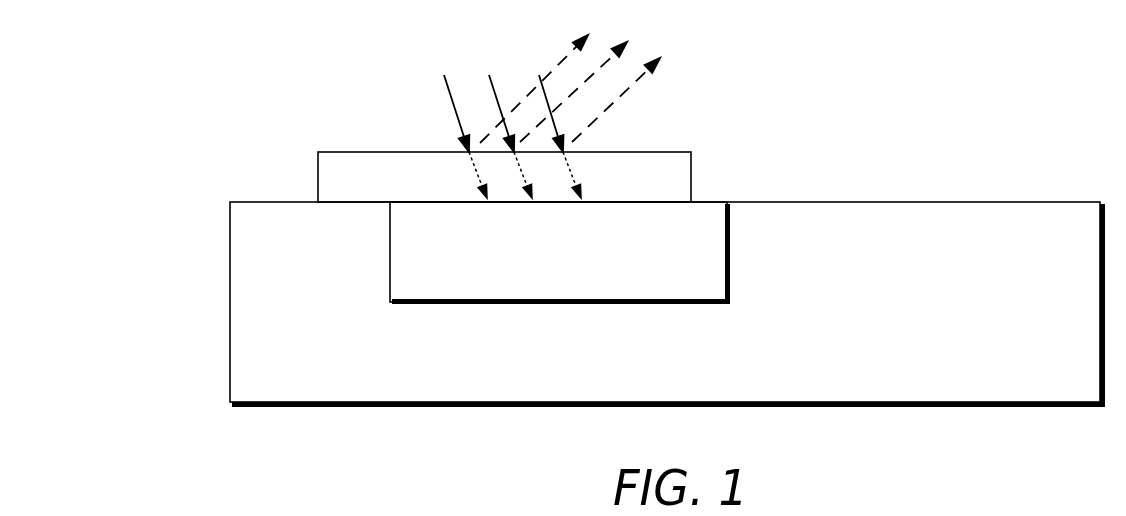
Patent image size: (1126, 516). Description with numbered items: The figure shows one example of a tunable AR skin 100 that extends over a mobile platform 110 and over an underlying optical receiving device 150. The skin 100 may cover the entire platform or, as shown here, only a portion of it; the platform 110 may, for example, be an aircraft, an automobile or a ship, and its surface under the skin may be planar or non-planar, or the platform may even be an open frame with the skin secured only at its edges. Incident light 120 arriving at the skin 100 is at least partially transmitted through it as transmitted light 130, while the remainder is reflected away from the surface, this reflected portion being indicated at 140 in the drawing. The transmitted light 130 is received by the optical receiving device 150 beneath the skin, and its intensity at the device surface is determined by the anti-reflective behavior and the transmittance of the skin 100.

The tunable AR skin 100 is at (318, 173).
The mobile platform 110 is at (230, 302).
The incident light 120 is at (440, 108).
The transmitted light 130 is at (569, 172).
The reflected light 140 is at (525, 32).
The optical receiving device 150 is at (390, 247).